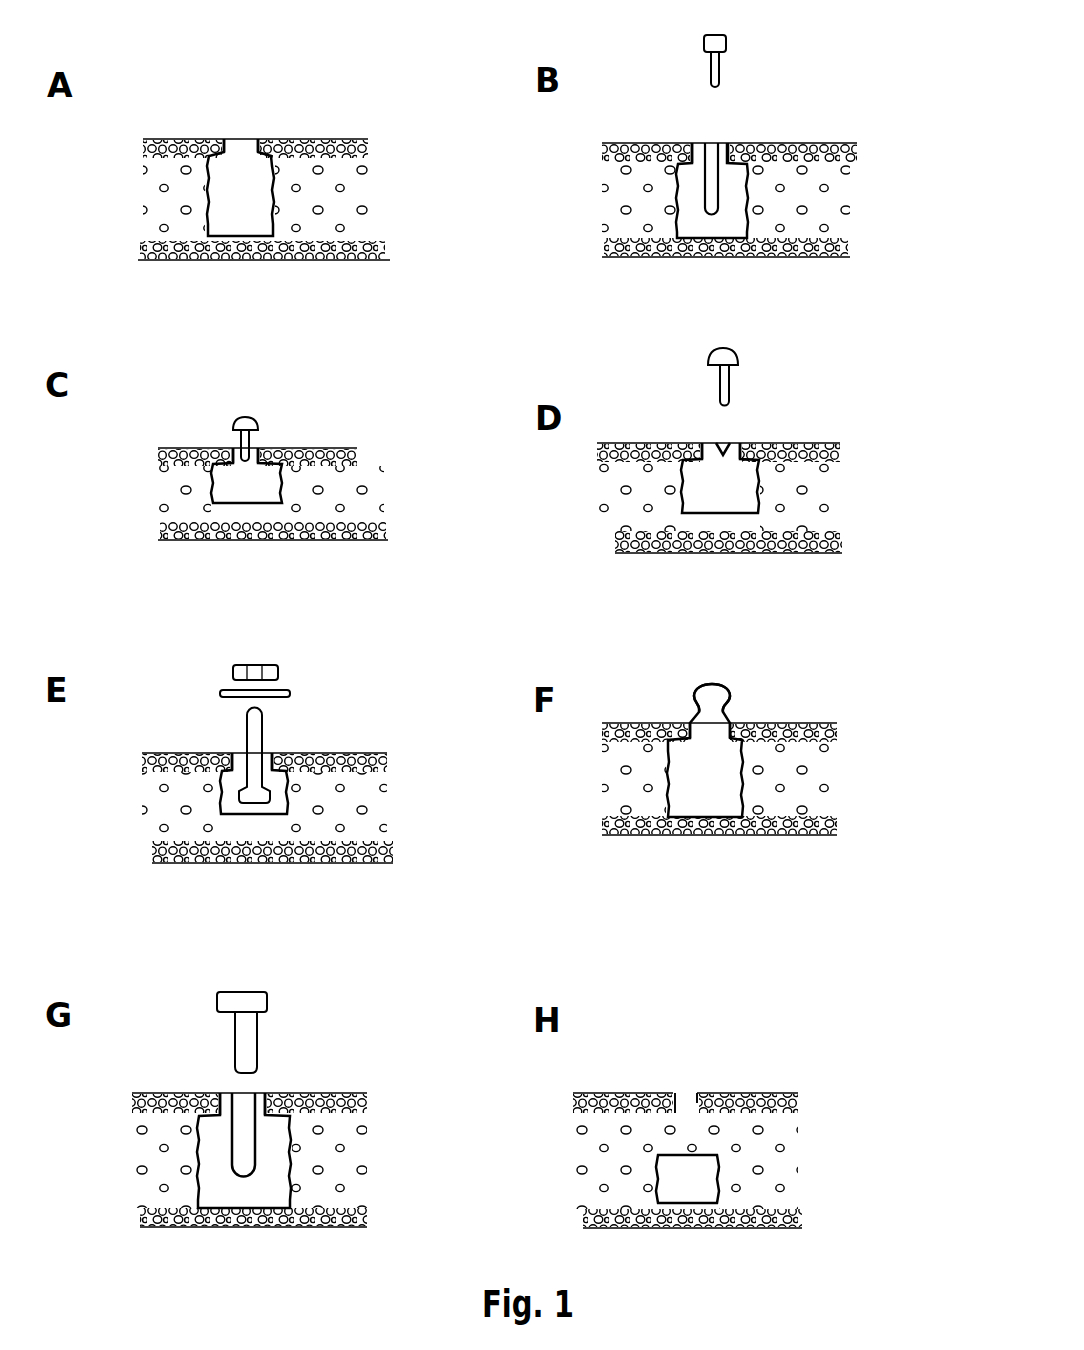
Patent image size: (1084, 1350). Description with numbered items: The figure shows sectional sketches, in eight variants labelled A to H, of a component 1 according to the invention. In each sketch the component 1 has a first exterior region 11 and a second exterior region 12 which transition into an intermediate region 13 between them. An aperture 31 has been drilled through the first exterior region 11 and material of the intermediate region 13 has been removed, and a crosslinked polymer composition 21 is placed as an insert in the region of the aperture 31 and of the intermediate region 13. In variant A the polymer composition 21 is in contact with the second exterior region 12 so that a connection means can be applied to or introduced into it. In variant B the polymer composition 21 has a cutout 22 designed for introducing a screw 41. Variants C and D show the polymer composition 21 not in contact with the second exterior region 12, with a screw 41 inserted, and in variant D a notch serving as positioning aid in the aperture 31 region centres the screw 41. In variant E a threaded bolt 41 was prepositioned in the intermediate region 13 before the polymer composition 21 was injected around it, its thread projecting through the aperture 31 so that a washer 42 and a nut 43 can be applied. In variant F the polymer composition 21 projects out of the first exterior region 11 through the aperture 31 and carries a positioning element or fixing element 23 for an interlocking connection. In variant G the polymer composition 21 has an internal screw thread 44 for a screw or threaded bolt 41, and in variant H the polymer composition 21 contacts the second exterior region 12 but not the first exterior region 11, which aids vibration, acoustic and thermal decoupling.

The component 1 is at (318, 60).
The first exterior region 11 is at (373, 150).
The second exterior region 12 is at (377, 248).
The intermediate region 13 is at (380, 153).
The polymer composition 21 is at (207, 200).
The cutout 22 is at (705, 175).
The positioning element or fixing element 23 is at (697, 693).
The aperture 31 is at (256, 138).
The screw 41 is at (707, 75).
The washer 42 is at (218, 693).
The nut 43 is at (233, 669).
The internal screw thread 44 is at (232, 1142).